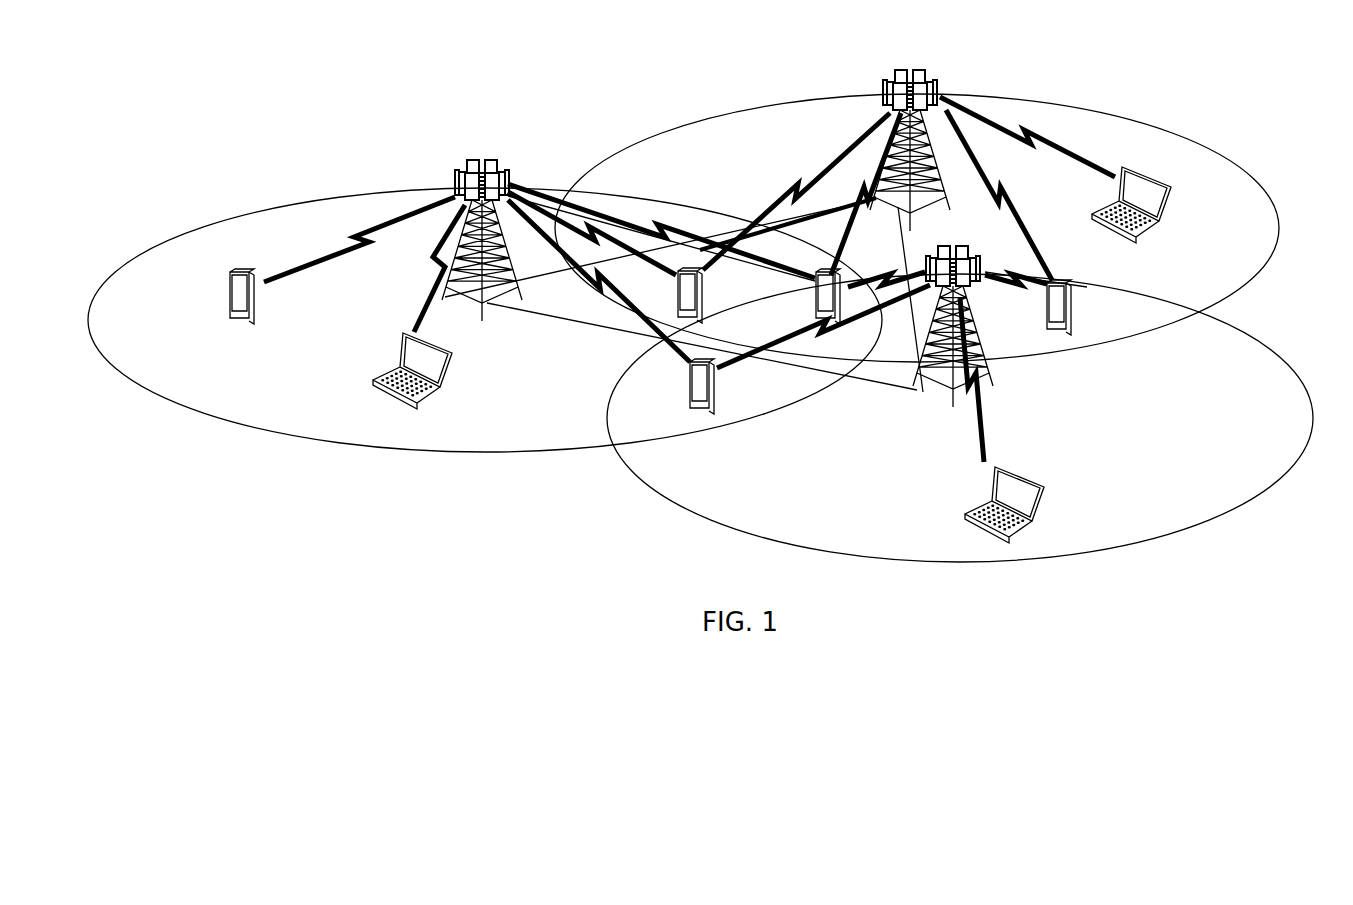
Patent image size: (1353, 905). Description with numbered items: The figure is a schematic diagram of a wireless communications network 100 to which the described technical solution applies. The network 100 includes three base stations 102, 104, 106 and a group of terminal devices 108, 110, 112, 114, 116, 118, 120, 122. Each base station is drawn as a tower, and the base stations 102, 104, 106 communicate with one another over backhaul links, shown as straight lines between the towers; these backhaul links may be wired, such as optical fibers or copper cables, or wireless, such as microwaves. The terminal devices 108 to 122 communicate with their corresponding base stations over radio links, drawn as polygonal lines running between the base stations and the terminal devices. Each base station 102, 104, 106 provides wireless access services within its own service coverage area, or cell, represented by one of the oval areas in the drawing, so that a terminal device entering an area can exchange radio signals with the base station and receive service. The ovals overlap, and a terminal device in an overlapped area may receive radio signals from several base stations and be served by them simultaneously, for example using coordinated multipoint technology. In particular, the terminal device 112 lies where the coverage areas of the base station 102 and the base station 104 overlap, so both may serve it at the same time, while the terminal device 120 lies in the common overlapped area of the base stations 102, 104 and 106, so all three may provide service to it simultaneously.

The wireless communications network 100 is at (700, 284).
The base station 102 is at (479, 160).
The base station 104 is at (951, 247).
The base station 106 is at (916, 70).
The terminal device 108 is at (254, 299).
The terminal device 110 is at (454, 351).
The terminal device 112 is at (690, 388).
The terminal device 114 is at (1040, 488).
The terminal device 116 is at (1072, 297).
The terminal device 118 is at (1165, 192).
The terminal device 120 is at (816, 299).
The terminal device 122 is at (703, 283).